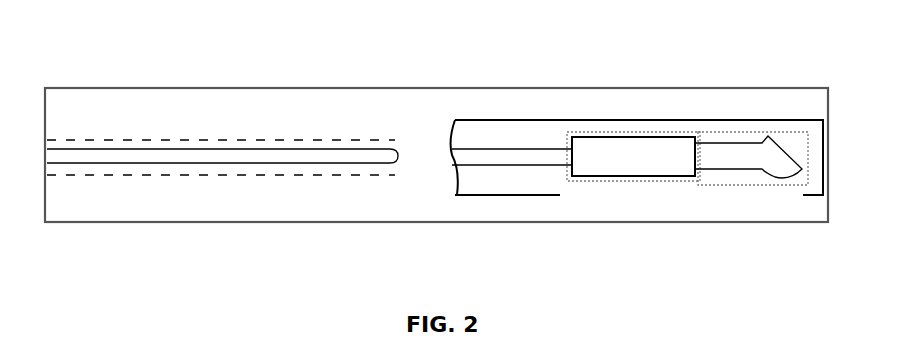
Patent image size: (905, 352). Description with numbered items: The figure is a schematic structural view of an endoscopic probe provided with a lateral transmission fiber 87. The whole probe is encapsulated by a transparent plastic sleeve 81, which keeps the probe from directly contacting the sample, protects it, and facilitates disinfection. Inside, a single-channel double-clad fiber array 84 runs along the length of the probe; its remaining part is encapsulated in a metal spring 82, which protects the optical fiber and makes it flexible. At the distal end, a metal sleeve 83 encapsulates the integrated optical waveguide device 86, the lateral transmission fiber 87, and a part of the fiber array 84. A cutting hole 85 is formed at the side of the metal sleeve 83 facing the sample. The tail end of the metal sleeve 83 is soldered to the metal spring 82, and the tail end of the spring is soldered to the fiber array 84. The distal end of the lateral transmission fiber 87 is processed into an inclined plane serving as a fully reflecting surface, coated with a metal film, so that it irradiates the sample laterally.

The plastic sleeve 81 is at (576, 72).
The metal spring 82 is at (230, 128).
The metal sleeve 83 is at (526, 111).
The single-channel double-clad fiber array 84 is at (489, 144).
The cutting hole 85 is at (692, 202).
The integrated optical waveguide device 86 is at (635, 125).
The lateral transmission fiber 87 is at (752, 125).